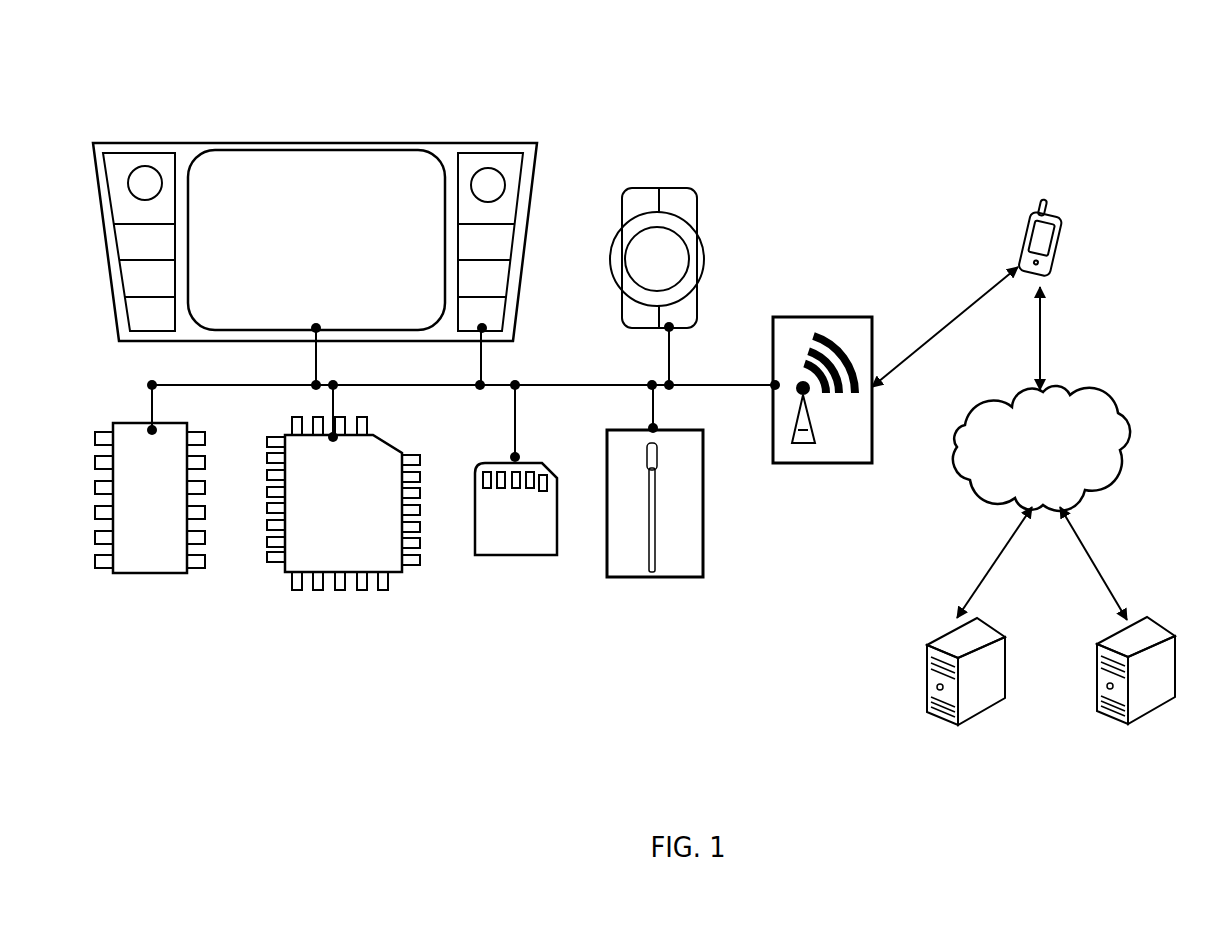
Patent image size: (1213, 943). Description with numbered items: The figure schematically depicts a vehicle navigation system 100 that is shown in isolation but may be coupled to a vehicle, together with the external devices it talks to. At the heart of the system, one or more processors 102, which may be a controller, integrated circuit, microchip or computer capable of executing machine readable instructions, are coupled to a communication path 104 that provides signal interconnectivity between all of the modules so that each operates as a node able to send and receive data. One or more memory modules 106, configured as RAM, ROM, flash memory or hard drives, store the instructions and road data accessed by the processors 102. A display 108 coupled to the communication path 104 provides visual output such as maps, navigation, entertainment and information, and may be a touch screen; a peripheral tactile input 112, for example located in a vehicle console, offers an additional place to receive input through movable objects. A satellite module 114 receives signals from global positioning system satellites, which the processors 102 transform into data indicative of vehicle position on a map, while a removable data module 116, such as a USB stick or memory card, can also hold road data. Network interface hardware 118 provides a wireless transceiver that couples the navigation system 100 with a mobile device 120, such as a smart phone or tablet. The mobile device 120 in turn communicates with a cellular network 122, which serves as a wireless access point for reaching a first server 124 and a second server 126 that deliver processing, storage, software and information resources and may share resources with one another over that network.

The vehicle navigation system 100 is at (112, 66).
The processor 102 is at (395, 568).
The communication path 104 is at (213, 390).
The memory module 106 is at (150, 563).
The display 108 is at (335, 158).
The peripheral tactile input 112 is at (677, 193).
The satellite module 114 is at (675, 568).
The removable data module 116 is at (502, 547).
The network interface hardware 118 is at (818, 457).
The mobile device 120 is at (1027, 213).
The cellular network 122 is at (1013, 405).
The first server 124 is at (942, 643).
The second server 126 is at (1160, 633).